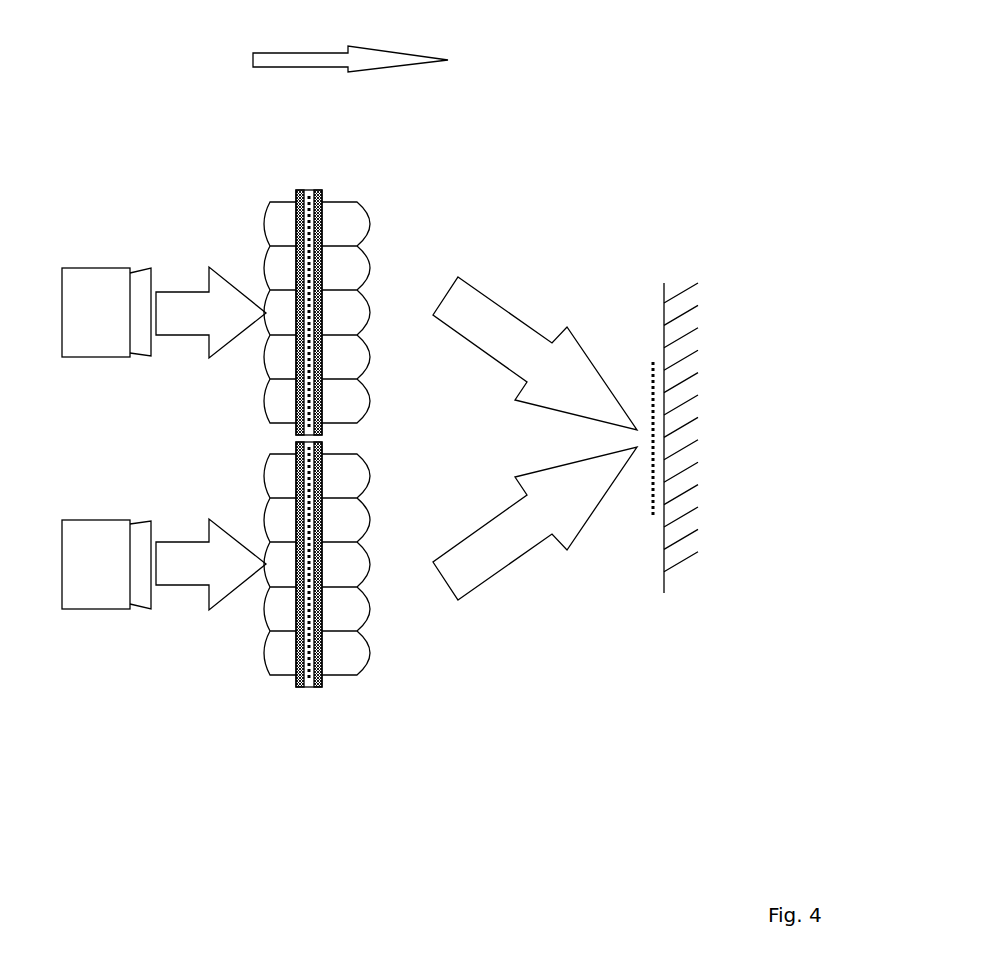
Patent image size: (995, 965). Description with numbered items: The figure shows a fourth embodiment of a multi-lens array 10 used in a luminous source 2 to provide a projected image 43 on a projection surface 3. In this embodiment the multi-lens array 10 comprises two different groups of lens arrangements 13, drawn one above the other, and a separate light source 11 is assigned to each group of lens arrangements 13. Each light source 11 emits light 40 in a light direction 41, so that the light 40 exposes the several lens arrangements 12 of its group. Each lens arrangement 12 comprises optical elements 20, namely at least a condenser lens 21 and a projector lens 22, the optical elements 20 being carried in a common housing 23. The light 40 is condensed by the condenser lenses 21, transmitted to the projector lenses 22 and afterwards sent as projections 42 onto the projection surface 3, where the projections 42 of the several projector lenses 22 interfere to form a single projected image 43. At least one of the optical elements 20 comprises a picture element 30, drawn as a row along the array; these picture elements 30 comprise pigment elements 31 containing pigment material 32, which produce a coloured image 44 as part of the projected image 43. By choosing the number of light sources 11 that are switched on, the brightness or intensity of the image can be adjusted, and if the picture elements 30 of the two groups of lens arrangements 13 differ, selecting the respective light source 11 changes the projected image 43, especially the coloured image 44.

The luminous source 2 is at (422, 410).
The multi-lens array 10 is at (124, 94).
The light source 11 is at (90, 278).
The lens arrangement 12 is at (268, 227).
The group of lens arrangements 13 is at (240, 261).
The optical element 20 is at (336, 452).
The condenser lens 21 is at (287, 213).
The projector lens 22 is at (335, 207).
The housing / frame 23 is at (307, 190).
The picture element 30 is at (403, 440).
The pigment element 31 is at (403, 440).
The pigment material 32 is at (308, 277).
The light 40 is at (197, 318).
The light direction 41 is at (312, 60).
The projection 42 is at (493, 332).
The projected image 43 is at (722, 439).
The coloured image 44 is at (653, 407).
The projection surface 3 is at (668, 555).